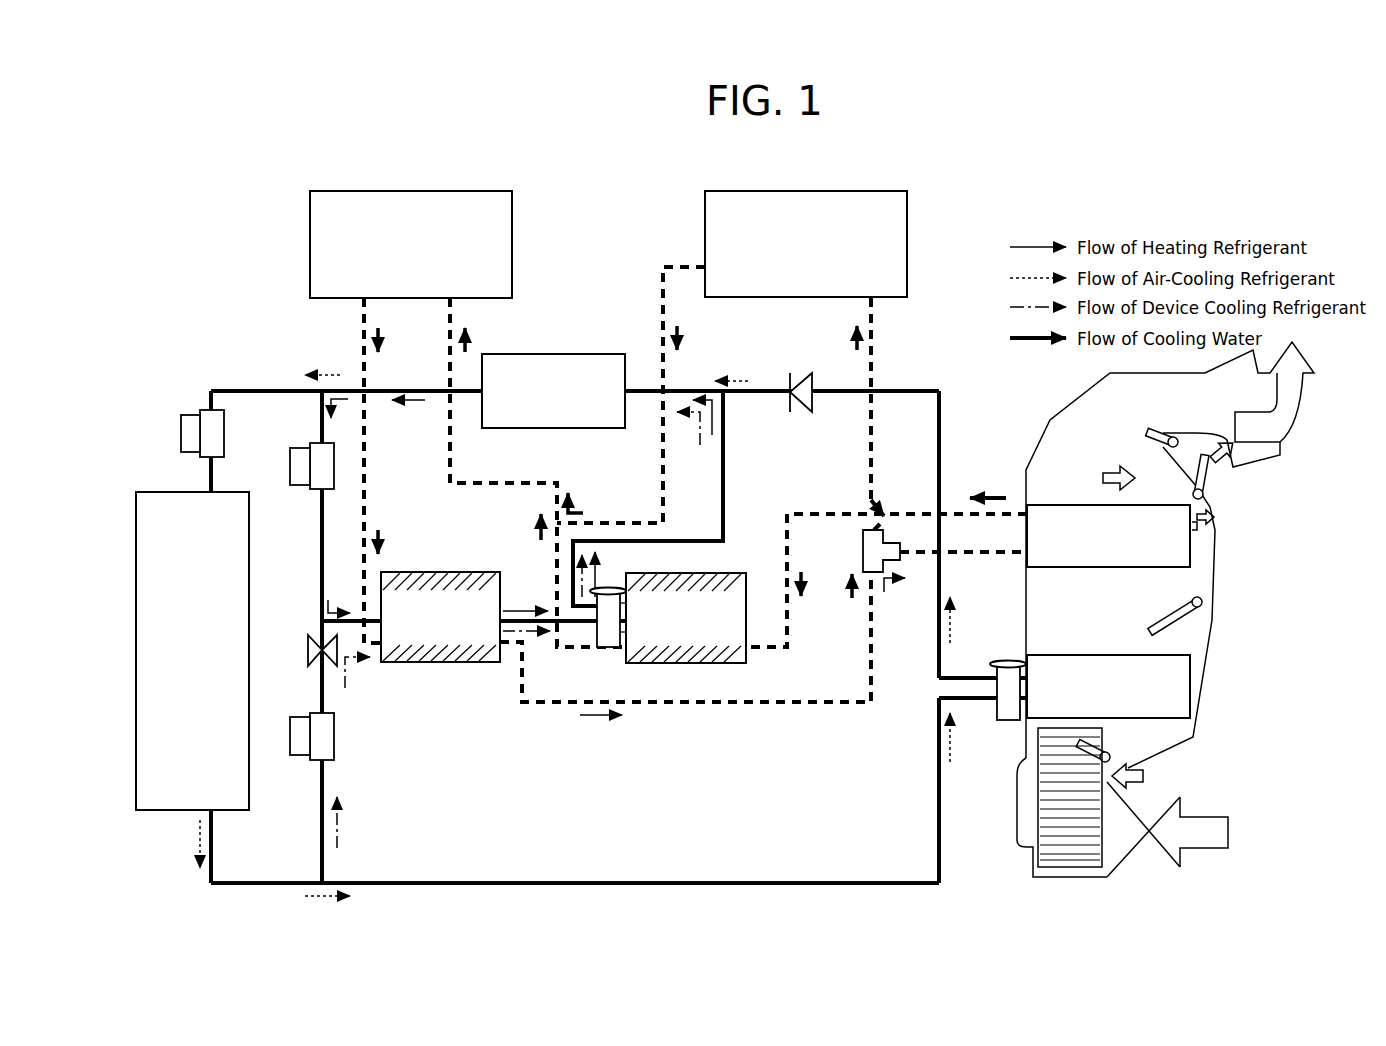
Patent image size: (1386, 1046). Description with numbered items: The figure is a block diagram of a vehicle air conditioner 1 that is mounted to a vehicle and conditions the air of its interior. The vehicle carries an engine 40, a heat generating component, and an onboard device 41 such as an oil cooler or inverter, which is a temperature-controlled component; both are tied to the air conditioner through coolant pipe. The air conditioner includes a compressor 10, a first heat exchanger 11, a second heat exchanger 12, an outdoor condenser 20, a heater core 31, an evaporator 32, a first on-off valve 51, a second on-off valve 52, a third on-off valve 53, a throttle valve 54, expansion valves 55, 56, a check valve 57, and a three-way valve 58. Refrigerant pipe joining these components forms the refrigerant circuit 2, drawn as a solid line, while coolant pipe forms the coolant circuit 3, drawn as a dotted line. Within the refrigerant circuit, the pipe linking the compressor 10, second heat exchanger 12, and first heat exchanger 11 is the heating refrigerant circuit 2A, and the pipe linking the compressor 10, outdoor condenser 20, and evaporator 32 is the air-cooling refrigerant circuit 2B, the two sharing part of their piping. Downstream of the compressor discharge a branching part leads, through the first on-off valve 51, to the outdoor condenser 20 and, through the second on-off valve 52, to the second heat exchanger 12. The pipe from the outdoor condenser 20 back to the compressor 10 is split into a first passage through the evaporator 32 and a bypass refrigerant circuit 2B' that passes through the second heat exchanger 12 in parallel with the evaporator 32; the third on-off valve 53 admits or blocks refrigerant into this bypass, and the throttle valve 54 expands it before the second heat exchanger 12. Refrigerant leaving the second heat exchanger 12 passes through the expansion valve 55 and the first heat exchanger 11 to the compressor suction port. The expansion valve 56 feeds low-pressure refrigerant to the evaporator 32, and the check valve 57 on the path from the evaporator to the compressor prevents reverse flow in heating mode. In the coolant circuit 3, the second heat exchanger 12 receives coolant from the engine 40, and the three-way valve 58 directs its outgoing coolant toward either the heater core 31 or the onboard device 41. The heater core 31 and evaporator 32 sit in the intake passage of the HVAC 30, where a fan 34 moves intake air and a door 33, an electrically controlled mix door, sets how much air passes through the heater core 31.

The vehicle air conditioner 1 is at (990, 220).
The refrigerant circuit 2 is at (254, 378).
The heating refrigerant circuit 2A is at (726, 456).
The air-cooling refrigerant circuit 2B is at (575, 861).
The bypass refrigerant circuit 2B' is at (296, 821).
The coolant circuit 3 is at (788, 705).
The compressor 10 is at (556, 354).
The first heat exchanger 11 is at (740, 572).
The second heat exchanger 12 is at (440, 571).
The outdoor condenser 20 is at (250, 535).
The HVAC 30 is at (1213, 500).
The heater core 31 is at (1191, 542).
The evaporator 32 is at (1191, 686).
The door 33 is at (1180, 622).
The fan 34 is at (1070, 863).
The engine 40 is at (513, 244).
The onboard device 41 is at (908, 244).
The first on-off valve 51 is at (190, 412).
The second on-off valve 52 is at (302, 446).
The third on-off valve 53 is at (336, 737).
The throttle valve 54 is at (308, 652).
The expansion valve 55 is at (611, 645).
The expansion valve 56 is at (1007, 661).
The check valve 57 is at (801, 373).
The three-way valve 58 is at (862, 552).